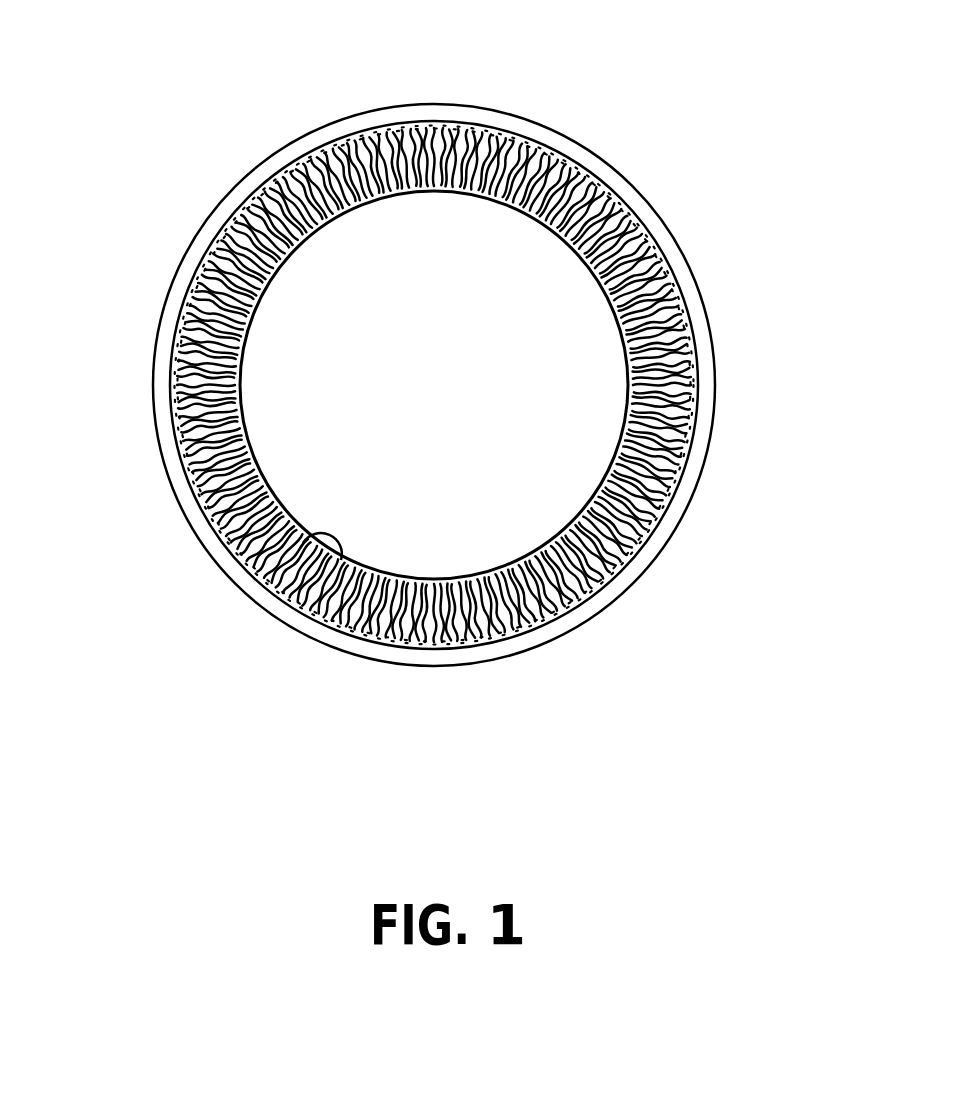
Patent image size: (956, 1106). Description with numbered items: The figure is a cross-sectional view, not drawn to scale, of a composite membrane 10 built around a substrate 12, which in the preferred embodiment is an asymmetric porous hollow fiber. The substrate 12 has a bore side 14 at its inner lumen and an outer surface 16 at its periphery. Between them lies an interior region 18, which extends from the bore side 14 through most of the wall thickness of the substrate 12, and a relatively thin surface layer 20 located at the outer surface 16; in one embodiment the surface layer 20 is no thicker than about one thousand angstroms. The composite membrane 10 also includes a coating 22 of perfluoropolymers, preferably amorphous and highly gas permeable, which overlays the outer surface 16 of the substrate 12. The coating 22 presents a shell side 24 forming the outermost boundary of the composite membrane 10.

The composite membrane 10 is at (650, 53).
The substrate 12 is at (690, 286).
The bore side 14 is at (341, 560).
The outer surface 16 is at (693, 378).
The interior region 18 is at (621, 545).
The surface layer 20 is at (672, 483).
The coating 22 is at (182, 489).
The shell side 24 is at (663, 221).